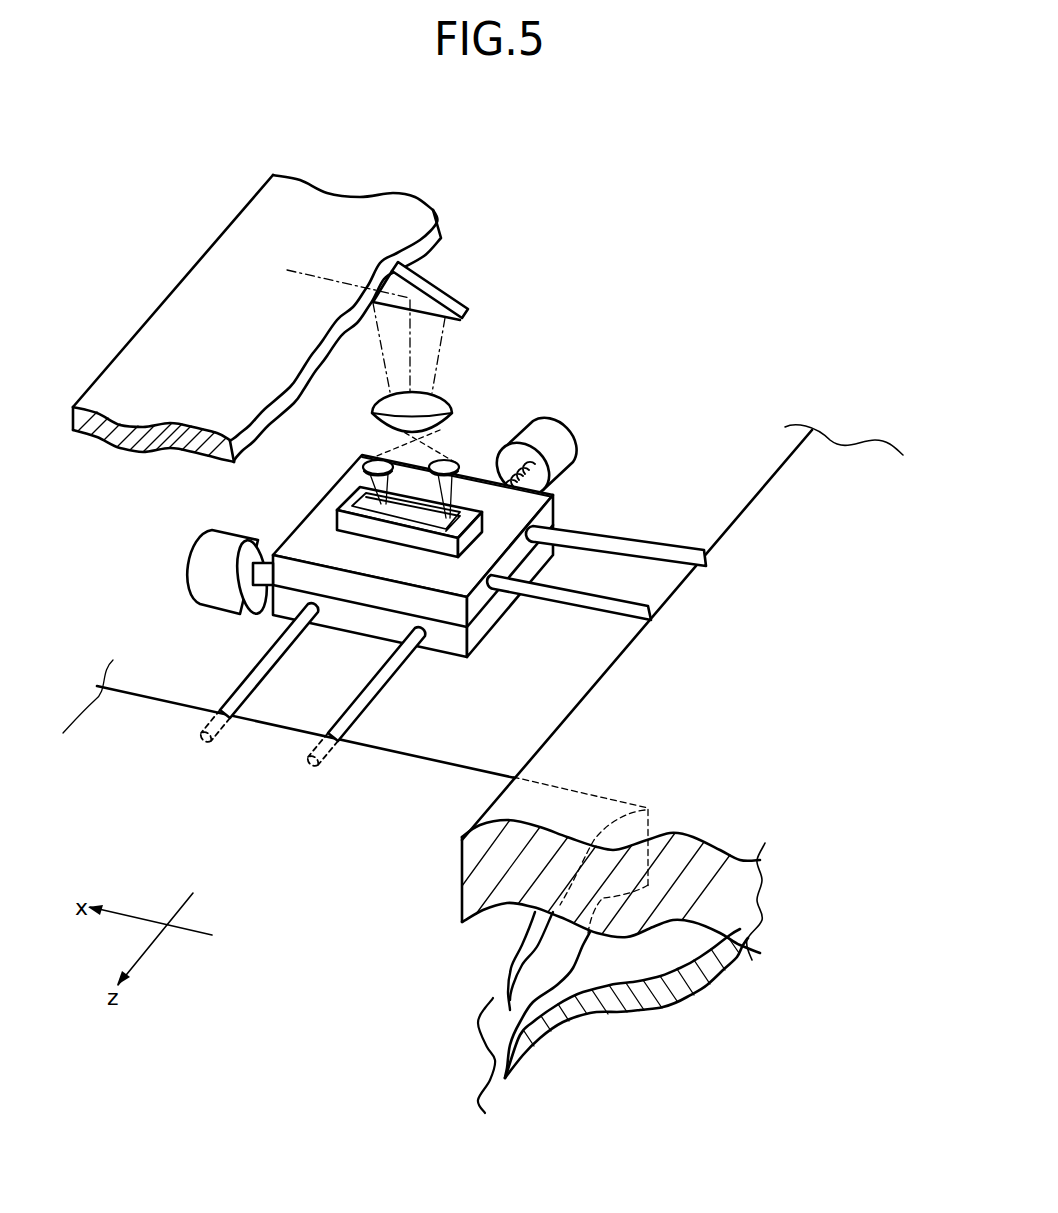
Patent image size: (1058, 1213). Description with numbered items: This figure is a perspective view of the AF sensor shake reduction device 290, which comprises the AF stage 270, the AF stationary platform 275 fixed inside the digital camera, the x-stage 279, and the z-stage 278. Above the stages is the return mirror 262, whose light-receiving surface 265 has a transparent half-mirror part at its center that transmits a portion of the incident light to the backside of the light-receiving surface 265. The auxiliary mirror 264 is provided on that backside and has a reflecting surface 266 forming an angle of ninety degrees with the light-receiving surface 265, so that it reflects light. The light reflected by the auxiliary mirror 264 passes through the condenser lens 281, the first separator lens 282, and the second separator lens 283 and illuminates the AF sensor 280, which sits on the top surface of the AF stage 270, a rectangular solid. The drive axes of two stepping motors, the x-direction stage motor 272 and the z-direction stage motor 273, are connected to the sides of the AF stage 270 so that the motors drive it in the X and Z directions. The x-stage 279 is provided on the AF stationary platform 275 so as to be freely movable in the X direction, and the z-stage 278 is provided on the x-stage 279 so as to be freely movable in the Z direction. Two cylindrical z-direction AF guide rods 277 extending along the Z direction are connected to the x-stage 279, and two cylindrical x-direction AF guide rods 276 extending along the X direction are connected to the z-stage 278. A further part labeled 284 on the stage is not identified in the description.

The return mirror 262 is at (243, 207).
The auxiliary mirror 264 is at (437, 287).
The light-receiving surface 265 is at (155, 350).
The reflecting surface 266 is at (450, 298).
The AF stage 270 is at (477, 635).
The x-direction stage motor 272 is at (560, 430).
The z-direction stage motor 273 is at (197, 570).
The AF stationary platform 275 is at (633, 962).
The x-direction AF guide rods 276 is at (660, 562).
The z-direction AF guide rods 277 is at (390, 670).
The z-stage 278 is at (764, 504).
The x-stage 279 is at (155, 712).
The AF sensor 280 is at (400, 534).
The condenser lens 281 is at (440, 397).
The first separator lens 282 is at (457, 460).
The second separator lens 283 is at (365, 460).
The mounting plate 284 is at (474, 500).
The AF sensor shake reduction device 290 is at (633, 272).